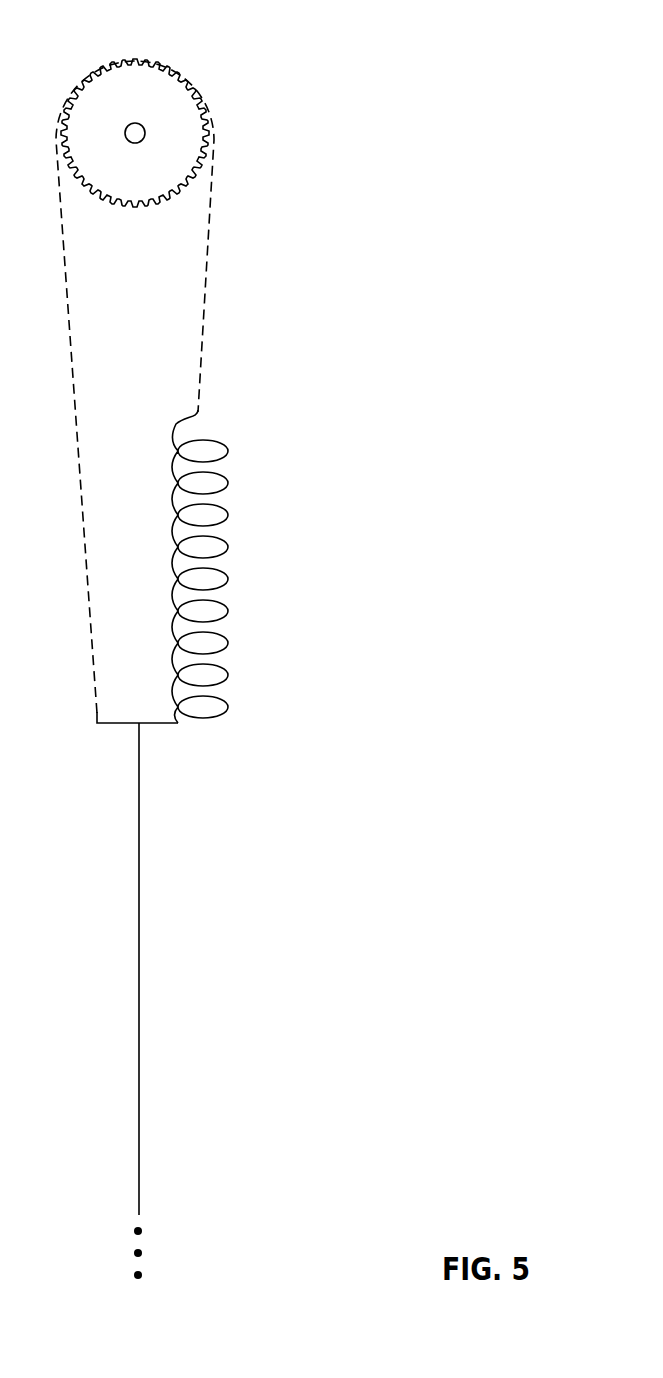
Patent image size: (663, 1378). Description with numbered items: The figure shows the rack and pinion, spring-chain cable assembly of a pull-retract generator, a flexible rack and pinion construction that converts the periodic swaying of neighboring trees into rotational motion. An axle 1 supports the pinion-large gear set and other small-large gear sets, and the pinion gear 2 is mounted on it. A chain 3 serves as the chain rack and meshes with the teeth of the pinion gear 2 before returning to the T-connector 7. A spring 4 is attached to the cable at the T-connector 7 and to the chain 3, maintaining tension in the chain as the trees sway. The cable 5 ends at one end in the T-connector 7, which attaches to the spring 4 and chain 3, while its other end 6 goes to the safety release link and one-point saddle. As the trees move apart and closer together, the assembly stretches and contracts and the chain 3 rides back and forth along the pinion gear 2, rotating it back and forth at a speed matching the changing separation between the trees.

The axle 1 is at (137, 123).
The pinion gear 2 is at (211, 110).
The chain 3 is at (212, 193).
The spring 4 is at (230, 543).
The cable 5 is at (139, 983).
The connection to safety release link and one-point saddle 6 is at (170, 1248).
The T-connector 7 is at (112, 727).